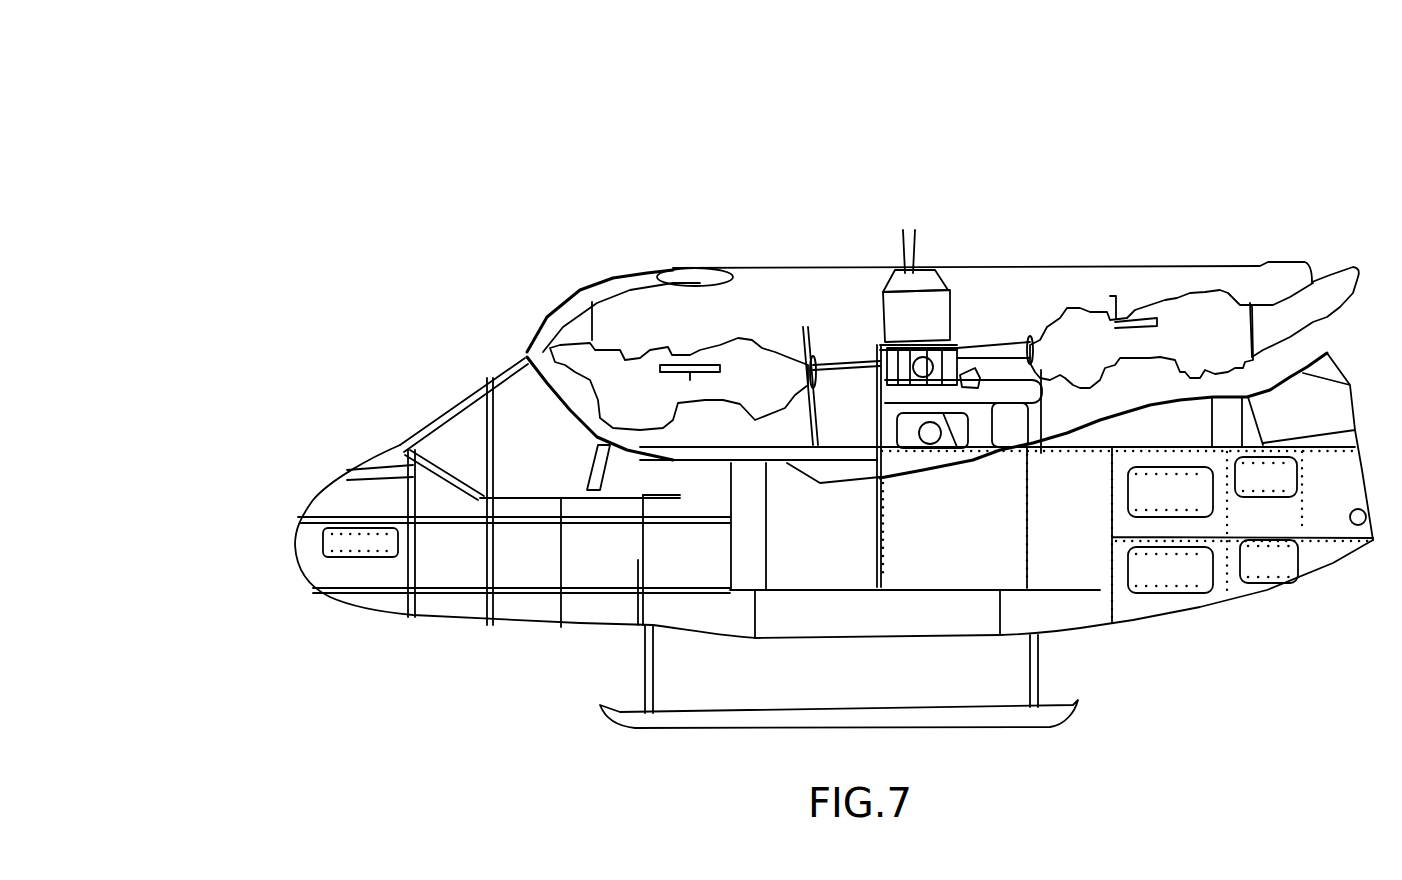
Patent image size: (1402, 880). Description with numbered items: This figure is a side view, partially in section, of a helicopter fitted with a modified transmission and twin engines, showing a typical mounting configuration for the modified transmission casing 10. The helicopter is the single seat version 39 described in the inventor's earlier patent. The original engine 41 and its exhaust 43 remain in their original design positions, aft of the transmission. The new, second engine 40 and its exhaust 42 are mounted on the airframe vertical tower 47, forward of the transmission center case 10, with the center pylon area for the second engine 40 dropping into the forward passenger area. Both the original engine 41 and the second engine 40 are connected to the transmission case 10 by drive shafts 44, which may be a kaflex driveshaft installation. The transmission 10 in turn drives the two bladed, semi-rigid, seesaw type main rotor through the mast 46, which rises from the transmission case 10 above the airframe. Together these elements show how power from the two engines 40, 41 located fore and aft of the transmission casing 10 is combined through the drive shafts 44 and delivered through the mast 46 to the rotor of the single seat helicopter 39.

The transmission casing 10 is at (873, 323).
The single seat version helicopter 39 is at (400, 443).
The second engine 40 is at (640, 377).
The original engine 41 is at (1087, 340).
The exhaust 42 is at (650, 290).
The exhaust 43 is at (1305, 310).
The drive shafts 44 is at (847, 360).
The mast 46 is at (917, 253).
The airframe vertical tower 47 is at (977, 348).